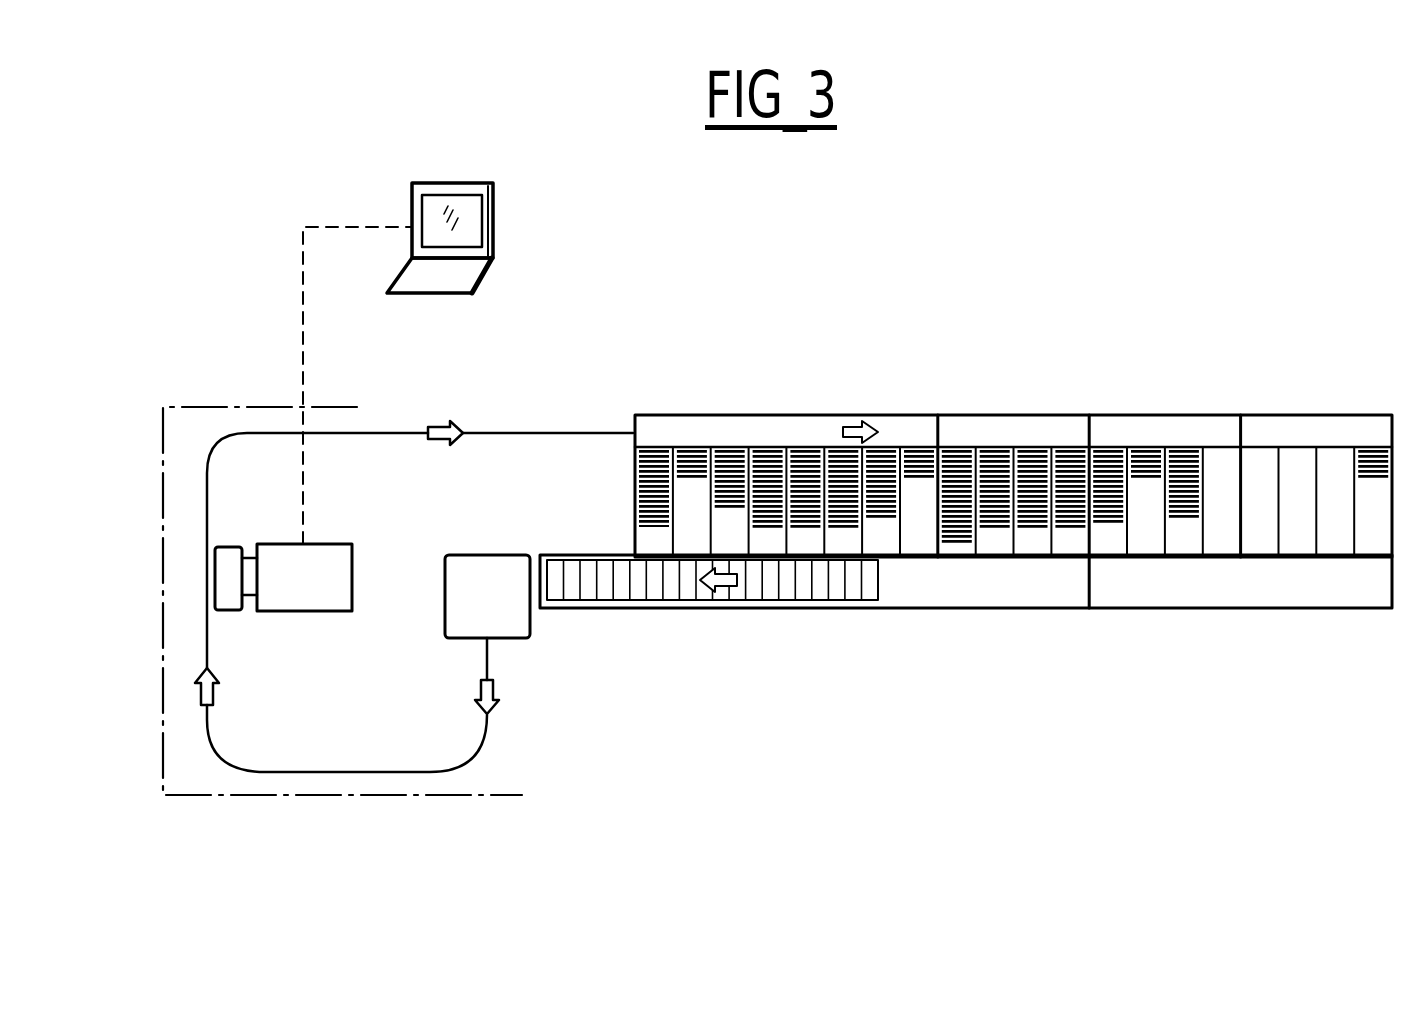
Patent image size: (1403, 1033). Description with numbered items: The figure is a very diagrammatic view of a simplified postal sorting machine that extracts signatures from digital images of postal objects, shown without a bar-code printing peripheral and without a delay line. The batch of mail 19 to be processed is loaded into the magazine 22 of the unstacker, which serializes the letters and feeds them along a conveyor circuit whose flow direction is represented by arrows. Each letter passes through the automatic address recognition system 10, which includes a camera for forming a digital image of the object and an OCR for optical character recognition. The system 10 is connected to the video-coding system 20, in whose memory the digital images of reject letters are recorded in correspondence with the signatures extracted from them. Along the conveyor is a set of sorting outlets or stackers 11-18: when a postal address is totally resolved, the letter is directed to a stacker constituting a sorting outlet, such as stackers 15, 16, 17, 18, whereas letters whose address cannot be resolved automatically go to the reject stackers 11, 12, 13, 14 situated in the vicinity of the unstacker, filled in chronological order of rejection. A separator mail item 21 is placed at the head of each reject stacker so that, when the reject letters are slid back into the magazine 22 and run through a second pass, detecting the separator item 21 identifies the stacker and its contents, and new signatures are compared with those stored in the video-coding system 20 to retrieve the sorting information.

The automatic address recognition system 10 is at (252, 576).
The reject stacker 11 is at (658, 455).
The reject stacker 12 is at (698, 462).
The reject stacker 13 is at (735, 462).
The reject stacker 14 is at (770, 466).
The sorting outlet stacker 15 is at (806, 466).
The sorting outlet stacker 16 is at (838, 468).
The sorting outlet stacker 17 is at (888, 468).
The sorting outlet stacker 18 is at (1372, 460).
The batch of mail 19 is at (757, 587).
The video-coding system 20 is at (465, 212).
The separator mail item 21 is at (655, 522).
The magazine 22 is at (836, 608).